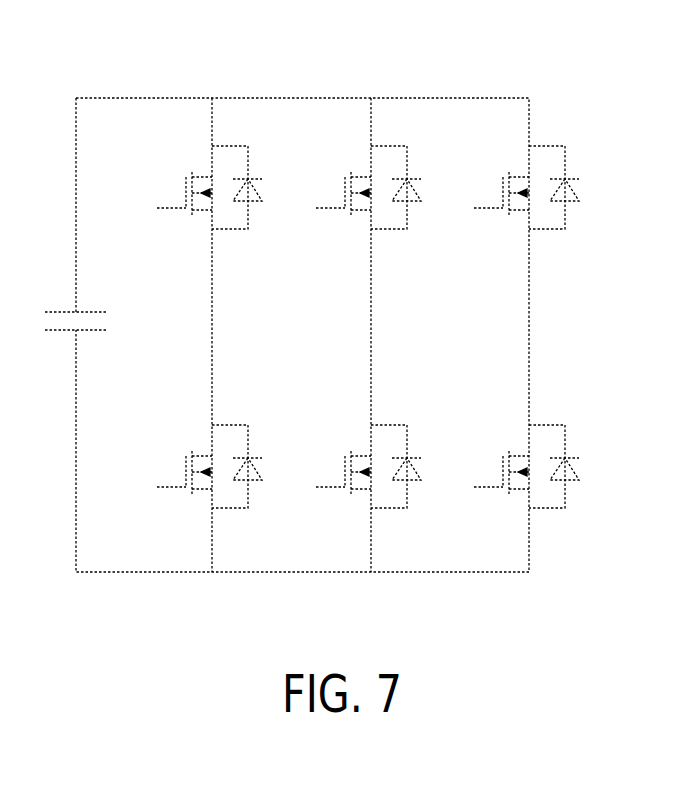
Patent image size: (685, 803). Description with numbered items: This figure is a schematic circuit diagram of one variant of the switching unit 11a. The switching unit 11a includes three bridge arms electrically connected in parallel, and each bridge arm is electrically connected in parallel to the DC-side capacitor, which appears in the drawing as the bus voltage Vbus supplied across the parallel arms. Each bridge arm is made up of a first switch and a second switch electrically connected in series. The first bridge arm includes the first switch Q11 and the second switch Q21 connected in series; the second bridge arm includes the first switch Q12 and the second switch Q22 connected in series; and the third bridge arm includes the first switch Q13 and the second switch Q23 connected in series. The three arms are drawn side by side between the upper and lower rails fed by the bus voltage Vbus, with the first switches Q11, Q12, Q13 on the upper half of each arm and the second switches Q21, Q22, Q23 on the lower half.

The switching unit 11a is at (549, 89).
The first switch Q11 is at (194, 187).
The first switch Q12 is at (355, 187).
The first switch Q13 is at (514, 187).
The second switch Q21 is at (194, 466).
The second switch Q22 is at (355, 466).
The second switch Q23 is at (514, 466).
The bus voltage source Vbus is at (105, 323).